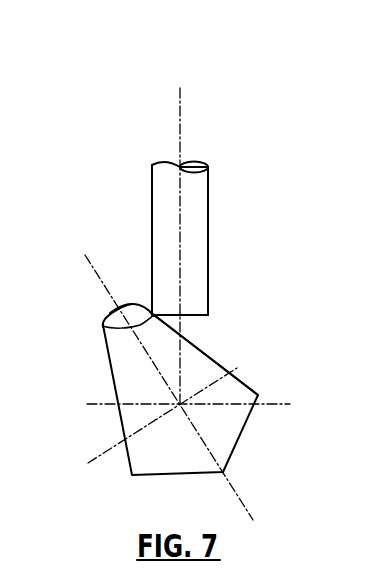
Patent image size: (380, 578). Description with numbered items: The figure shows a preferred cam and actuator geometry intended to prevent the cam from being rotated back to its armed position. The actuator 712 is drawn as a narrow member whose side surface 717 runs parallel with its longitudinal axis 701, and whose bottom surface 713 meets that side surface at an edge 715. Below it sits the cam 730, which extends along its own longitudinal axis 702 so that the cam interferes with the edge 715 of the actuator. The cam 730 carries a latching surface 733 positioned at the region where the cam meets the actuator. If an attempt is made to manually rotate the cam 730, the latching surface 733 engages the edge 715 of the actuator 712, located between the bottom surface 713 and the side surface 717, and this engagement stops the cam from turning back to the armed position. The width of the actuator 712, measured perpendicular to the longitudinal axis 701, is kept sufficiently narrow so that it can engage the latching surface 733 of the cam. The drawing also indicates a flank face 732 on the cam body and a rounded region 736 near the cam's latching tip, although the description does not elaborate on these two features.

The longitudinal axis 701 is at (180, 100).
The longitudinal axis 702 is at (97, 277).
The actuator 712 is at (198, 197).
The bottom surface 713 is at (193, 315).
The edge 715 is at (103, 326).
The side surface 717 is at (152, 196).
The cam 730 is at (95, 420).
The flank face of cutting insert 732 is at (213, 342).
The latching surface 733 is at (152, 313).
The rounded cutting edge 736 is at (117, 307).